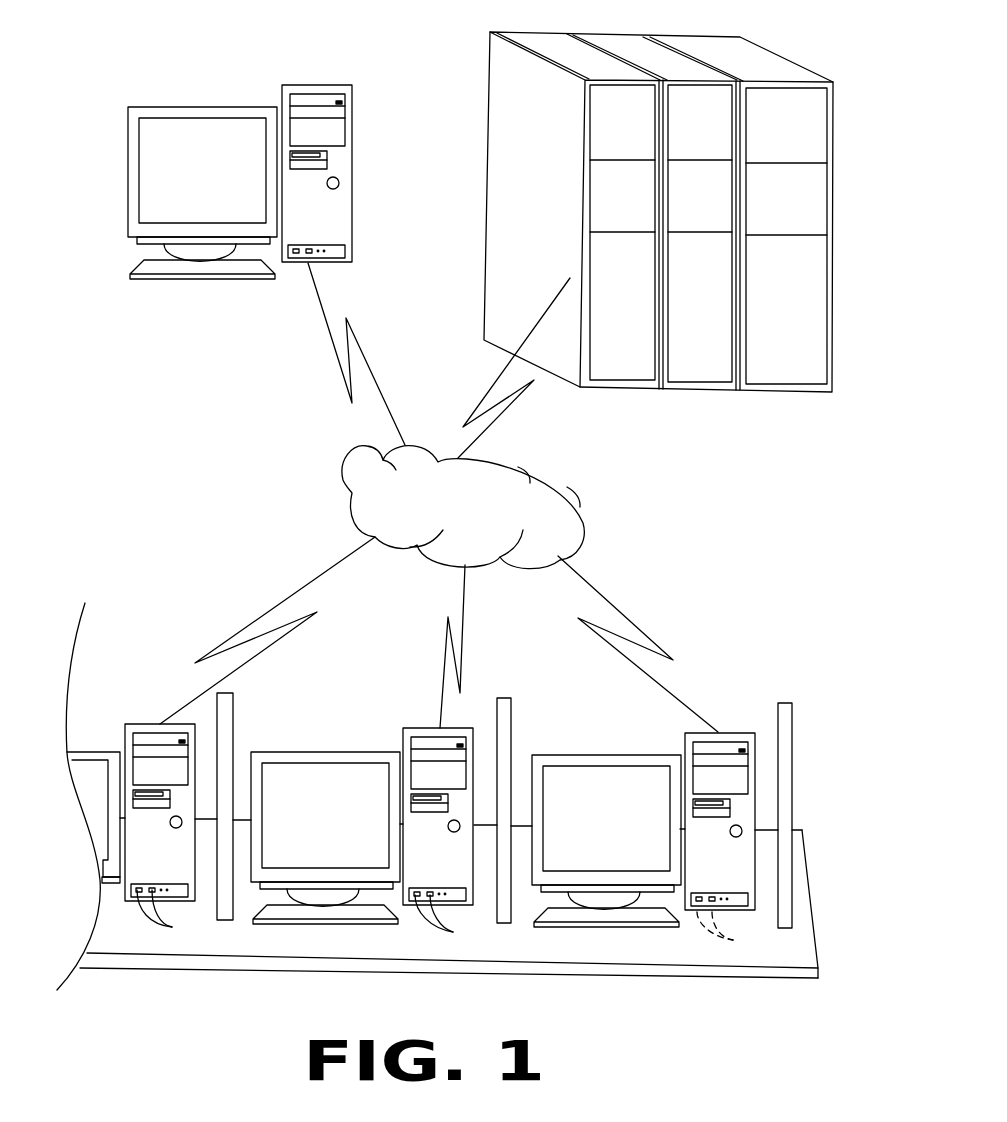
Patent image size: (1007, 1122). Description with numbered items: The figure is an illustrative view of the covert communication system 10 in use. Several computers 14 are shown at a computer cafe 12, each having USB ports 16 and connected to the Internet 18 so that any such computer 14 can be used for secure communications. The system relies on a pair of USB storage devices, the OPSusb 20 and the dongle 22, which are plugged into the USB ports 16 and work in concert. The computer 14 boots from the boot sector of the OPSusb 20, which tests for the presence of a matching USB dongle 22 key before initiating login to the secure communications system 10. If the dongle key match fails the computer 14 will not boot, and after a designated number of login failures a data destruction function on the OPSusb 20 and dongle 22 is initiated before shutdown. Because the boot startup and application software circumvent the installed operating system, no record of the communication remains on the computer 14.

The covert communication system 10 is at (428, 190).
The computer cafe 12 is at (738, 698).
The computer 14 is at (318, 83).
The USB port 16 is at (452, 926).
The Internet 18 is at (490, 513).
The OPSusb 20 is at (707, 895).
The dongle 22 is at (690, 895).